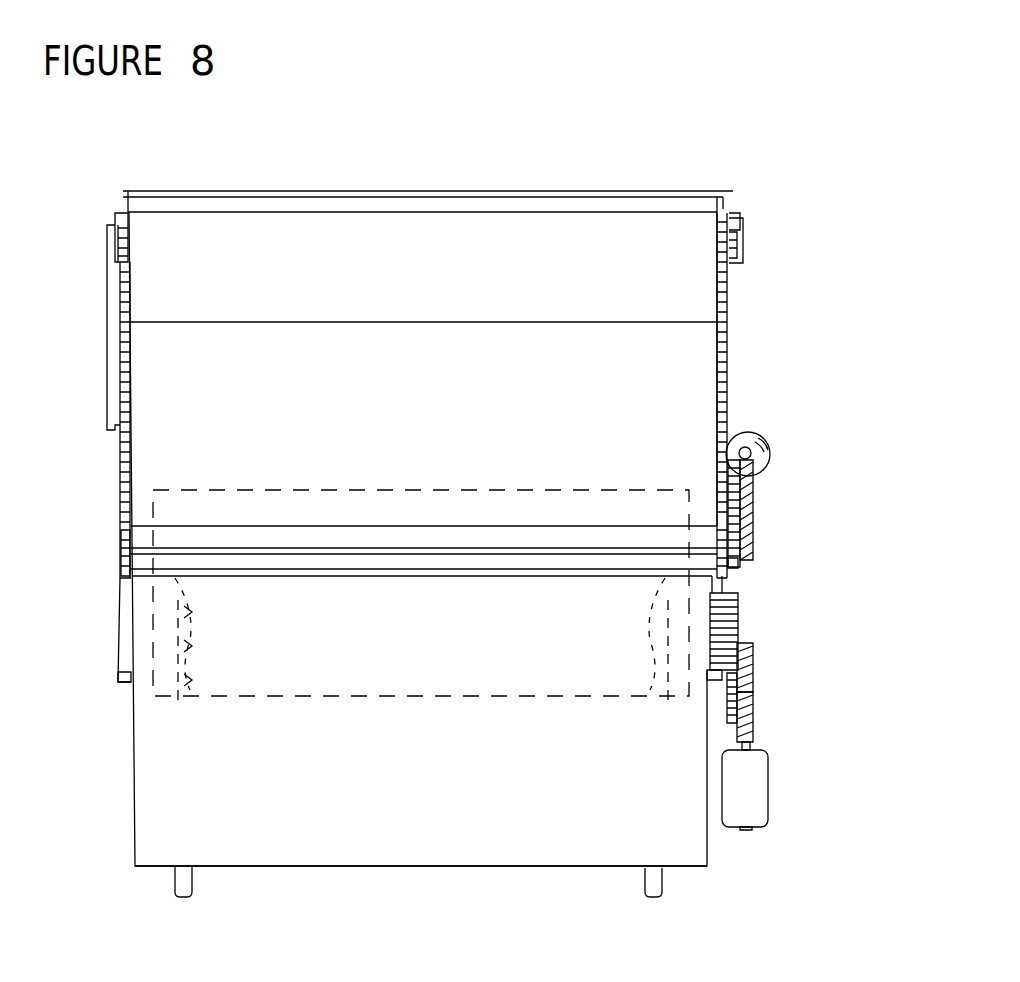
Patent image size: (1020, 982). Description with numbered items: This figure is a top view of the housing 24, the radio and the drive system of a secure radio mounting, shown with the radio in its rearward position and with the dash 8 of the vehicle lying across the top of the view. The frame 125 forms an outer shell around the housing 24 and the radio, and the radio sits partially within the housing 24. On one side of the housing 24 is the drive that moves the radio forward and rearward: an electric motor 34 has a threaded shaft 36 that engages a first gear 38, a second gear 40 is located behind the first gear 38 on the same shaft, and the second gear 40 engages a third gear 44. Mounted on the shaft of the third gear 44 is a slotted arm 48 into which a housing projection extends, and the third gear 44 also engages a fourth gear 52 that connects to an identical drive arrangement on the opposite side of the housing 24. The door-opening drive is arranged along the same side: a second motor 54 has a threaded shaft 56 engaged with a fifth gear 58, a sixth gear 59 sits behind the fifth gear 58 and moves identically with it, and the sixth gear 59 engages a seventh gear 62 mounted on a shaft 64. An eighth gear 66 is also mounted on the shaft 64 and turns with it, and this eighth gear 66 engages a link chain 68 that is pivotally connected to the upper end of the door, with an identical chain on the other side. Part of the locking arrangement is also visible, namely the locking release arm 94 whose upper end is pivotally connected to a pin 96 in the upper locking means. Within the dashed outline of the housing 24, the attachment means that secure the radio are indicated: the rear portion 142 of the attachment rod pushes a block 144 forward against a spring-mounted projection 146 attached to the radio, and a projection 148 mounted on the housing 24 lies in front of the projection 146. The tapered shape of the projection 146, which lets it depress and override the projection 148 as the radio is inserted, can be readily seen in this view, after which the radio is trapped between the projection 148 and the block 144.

The dash 8 is at (676, 188).
The housing 24 is at (152, 696).
The electric motor 34 is at (758, 808).
The threaded shaft 36 is at (752, 727).
The first gear 38 is at (752, 657).
The second gear 40 is at (752, 700).
The third gear 44 is at (740, 625).
The arm 48 is at (128, 607).
The fourth gear 52 is at (120, 677).
The second motor 54 is at (768, 455).
The threaded shaft 56 is at (745, 447).
The fifth gear 58 is at (748, 488).
The sixth gear 59 is at (733, 508).
The seventh gear 62 is at (740, 562).
The shaft 64 is at (610, 550).
The eighth gear 66 is at (120, 552).
The link chain 68 is at (120, 486).
The locking release arm 94 is at (115, 247).
The pin 96 is at (117, 222).
The frame 125 is at (272, 868).
The rear portion of the rod 142 is at (178, 886).
The block 144 is at (190, 680).
The spring-mounted projection 146 is at (190, 646).
The projection 148 is at (190, 612).